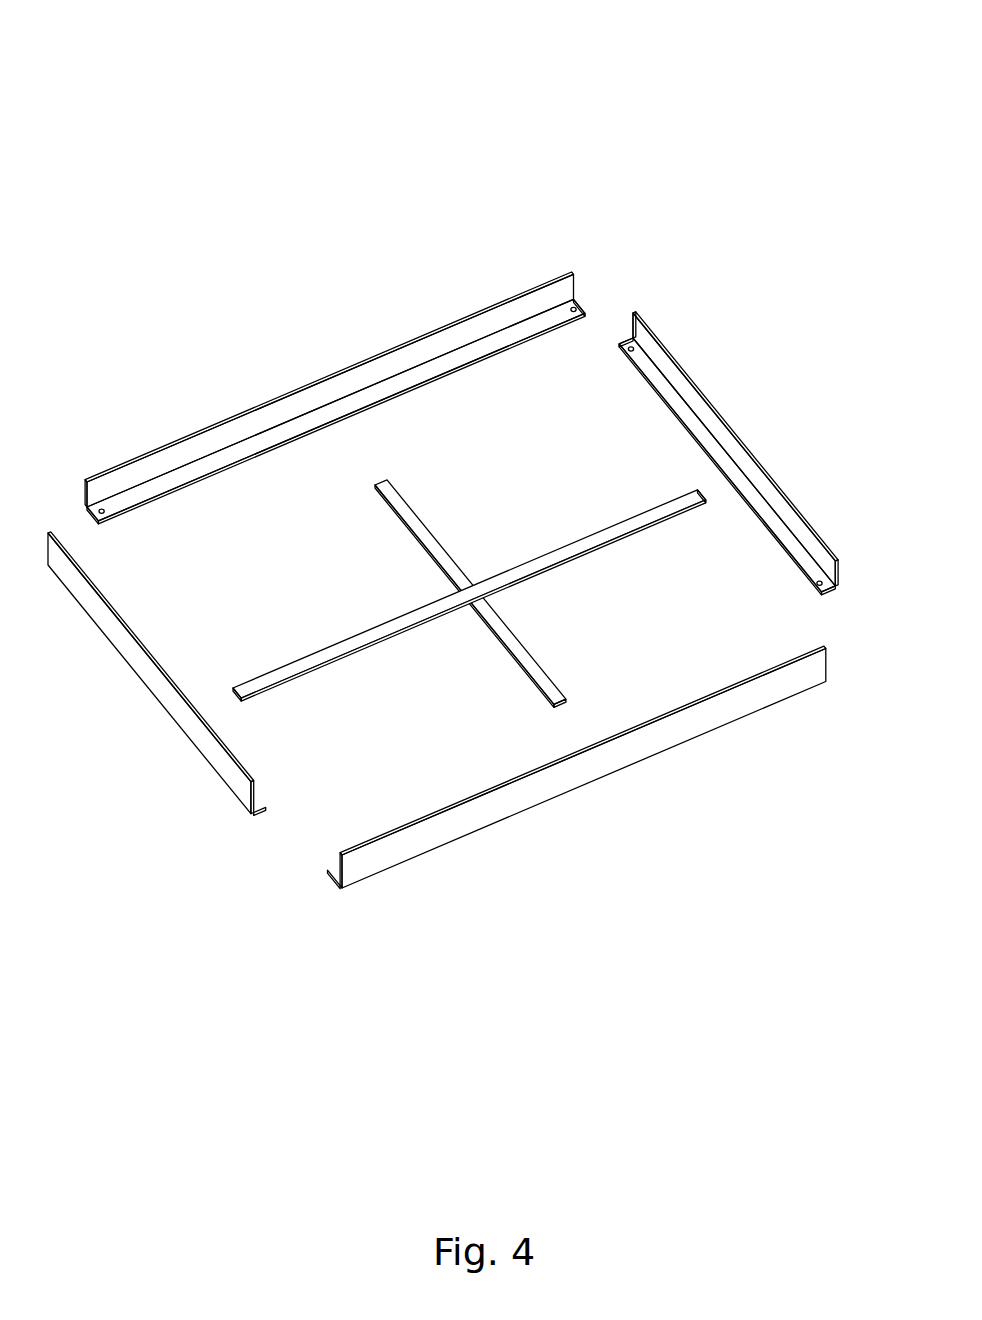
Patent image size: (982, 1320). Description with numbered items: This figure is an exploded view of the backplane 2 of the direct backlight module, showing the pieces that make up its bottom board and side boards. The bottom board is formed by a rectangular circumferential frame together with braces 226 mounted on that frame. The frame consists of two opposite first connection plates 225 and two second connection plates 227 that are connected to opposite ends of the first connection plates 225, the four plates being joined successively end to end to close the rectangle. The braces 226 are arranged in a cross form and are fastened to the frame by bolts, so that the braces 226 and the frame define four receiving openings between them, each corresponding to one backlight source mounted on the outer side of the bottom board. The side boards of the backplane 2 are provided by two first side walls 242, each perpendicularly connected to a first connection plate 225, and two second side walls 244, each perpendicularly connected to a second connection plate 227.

The backplane 2 is at (483, 63).
The first side wall 242 is at (313, 402).
The first connection plate 225 is at (242, 458).
The second side wall 244 is at (712, 427).
The second connection plate 227 is at (653, 382).
The brace 226 is at (632, 527).